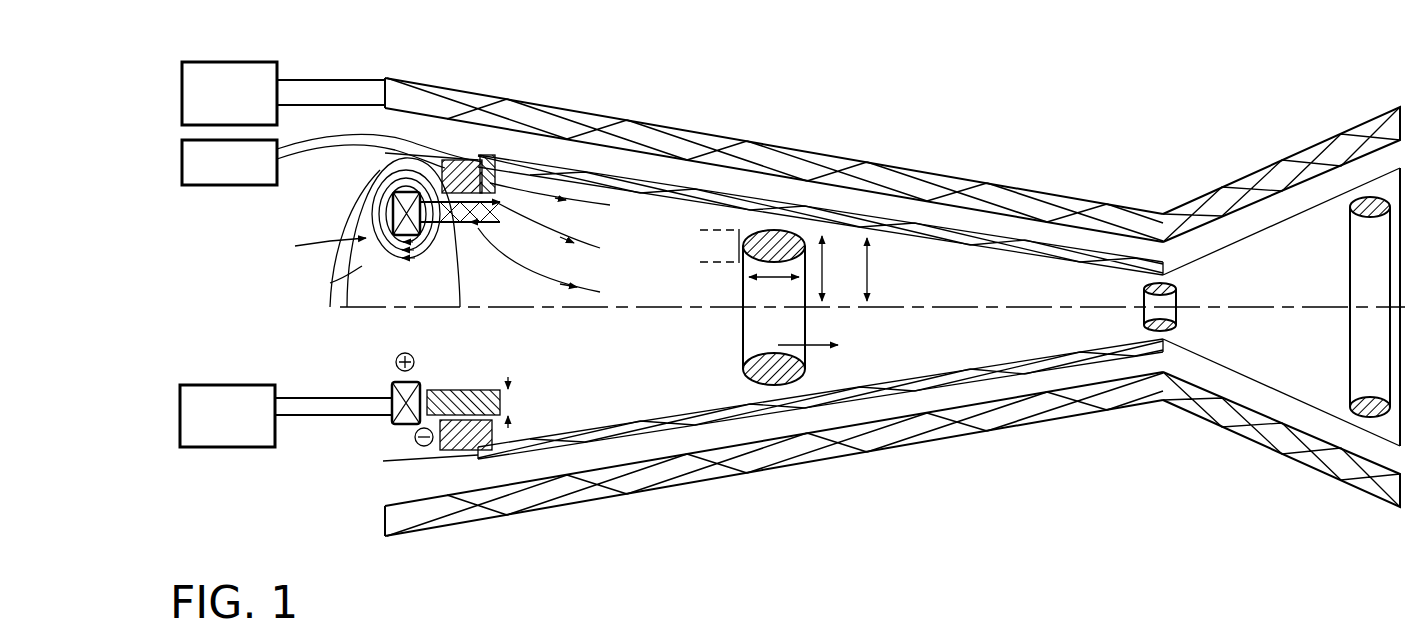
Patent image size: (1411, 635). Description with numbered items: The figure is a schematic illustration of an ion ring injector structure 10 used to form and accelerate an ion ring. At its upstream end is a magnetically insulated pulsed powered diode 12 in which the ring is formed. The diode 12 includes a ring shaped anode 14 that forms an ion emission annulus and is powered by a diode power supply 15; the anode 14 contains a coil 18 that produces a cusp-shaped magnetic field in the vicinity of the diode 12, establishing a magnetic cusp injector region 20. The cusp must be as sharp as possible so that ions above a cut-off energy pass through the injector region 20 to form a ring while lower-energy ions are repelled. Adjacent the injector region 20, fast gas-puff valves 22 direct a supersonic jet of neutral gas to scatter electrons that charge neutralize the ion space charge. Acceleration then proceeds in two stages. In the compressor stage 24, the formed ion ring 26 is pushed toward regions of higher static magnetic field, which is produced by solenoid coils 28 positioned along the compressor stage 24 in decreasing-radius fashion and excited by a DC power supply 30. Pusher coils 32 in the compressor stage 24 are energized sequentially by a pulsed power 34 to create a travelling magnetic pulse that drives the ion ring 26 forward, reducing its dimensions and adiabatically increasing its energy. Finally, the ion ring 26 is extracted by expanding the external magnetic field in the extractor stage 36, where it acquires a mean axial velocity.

The ion ring injector structure 10 is at (1143, 110).
The magnetically insulated pulsed powered diode 12 is at (330, 283).
The ring shaped anode 14 is at (300, 243).
The diode power supply 15 is at (218, 385).
The coil 18 is at (392, 205).
The magnetic cusp injector region 20 is at (514, 338).
The fast gas-puff valves 22 is at (460, 468).
The compressor stage 24 is at (1160, 418).
The ion ring 26 is at (743, 365).
The solenoid coils 28 is at (495, 96).
The DC power supply 30 is at (233, 62).
The pusher coils 32 is at (972, 226).
The pulsed power 34 is at (182, 160).
The extractor stage 36 is at (1393, 520).